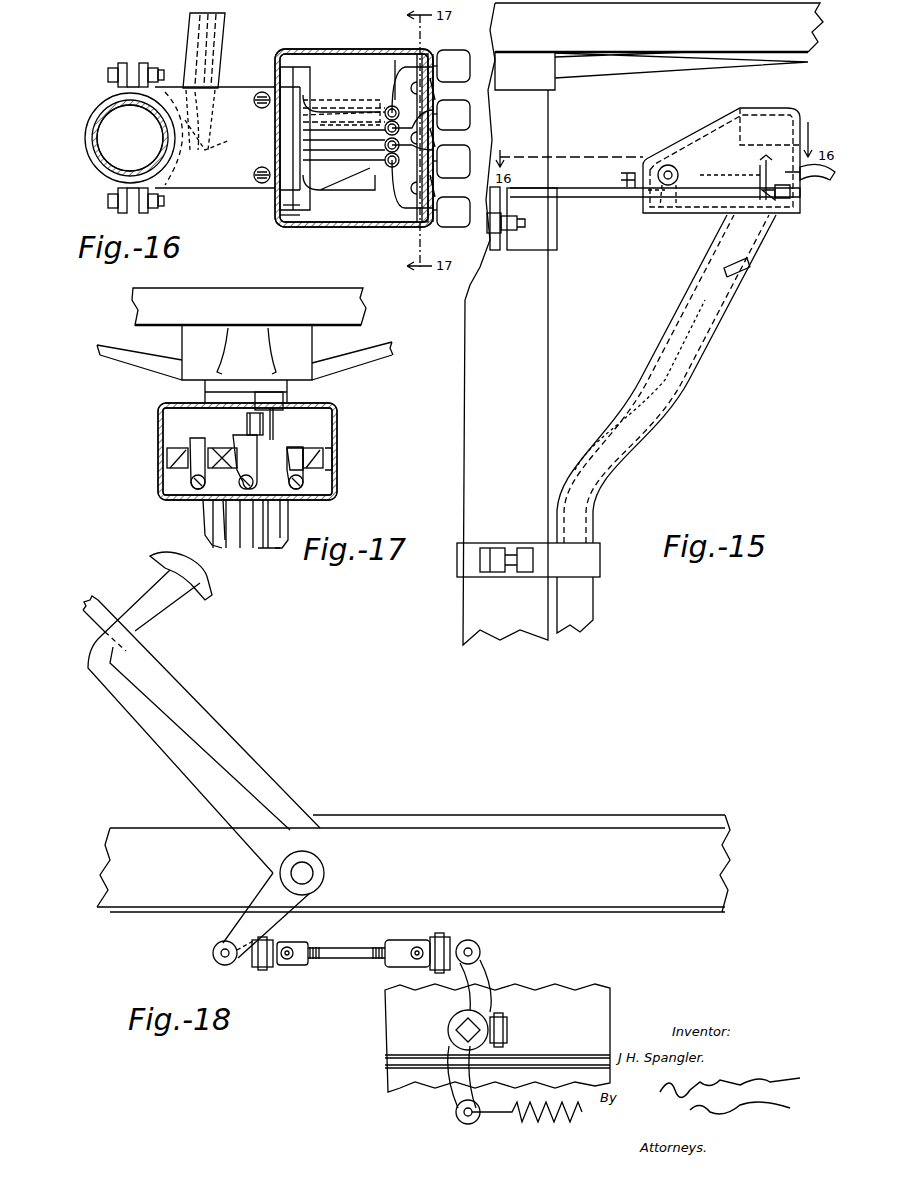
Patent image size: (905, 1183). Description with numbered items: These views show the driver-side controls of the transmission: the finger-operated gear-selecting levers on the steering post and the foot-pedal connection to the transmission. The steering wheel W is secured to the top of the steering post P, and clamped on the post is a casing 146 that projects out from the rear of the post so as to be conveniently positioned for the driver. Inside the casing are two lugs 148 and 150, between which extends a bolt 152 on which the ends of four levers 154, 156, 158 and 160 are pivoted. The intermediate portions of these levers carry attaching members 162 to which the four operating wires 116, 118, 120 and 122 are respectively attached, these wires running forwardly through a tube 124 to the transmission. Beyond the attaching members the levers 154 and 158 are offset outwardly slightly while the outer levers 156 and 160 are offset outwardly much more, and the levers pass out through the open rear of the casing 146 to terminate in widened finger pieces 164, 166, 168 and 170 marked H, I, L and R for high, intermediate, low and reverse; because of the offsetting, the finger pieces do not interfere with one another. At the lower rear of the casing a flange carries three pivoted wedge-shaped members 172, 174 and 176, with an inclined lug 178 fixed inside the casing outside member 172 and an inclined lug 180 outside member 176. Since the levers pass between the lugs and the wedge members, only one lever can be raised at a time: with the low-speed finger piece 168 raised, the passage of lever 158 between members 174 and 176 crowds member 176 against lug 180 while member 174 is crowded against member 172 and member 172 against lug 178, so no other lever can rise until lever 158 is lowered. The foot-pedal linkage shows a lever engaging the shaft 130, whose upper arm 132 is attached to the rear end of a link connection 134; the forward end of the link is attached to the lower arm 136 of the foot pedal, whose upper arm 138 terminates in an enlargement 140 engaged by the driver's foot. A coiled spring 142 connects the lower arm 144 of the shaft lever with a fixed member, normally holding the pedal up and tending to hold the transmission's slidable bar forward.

In FIG. 16, the steering post P is at (100, 168).
In FIG. 15, the steering post P is at (538, 350).
In FIG. 15, the steering wheel W is at (652, 40).
In FIG. 17, the steering wheel W is at (232, 292).
In FIG. 16, the conductor wire 116 is at (345, 150).
In FIG. 17, the conductor wire 116 is at (225, 532).
In FIG. 16, the conductor wire 118 is at (342, 135).
In FIG. 15, the conductor wire 118 is at (680, 335).
In FIG. 17, the conductor wire 118 is at (240, 515).
In FIG. 16, the conductor wire 120 is at (360, 80).
In FIG. 17, the conductor wire 120 is at (263, 555).
In FIG. 16, the conductor wire 122 is at (393, 60).
In FIG. 17, the conductor wire 122 is at (285, 512).
In FIG. 16, the tube 124 is at (222, 38).
In FIG. 15, the tube 124 is at (623, 462).
In FIG. 18, the shaft 130 is at (456, 1030).
In FIG. 18, the upper arm of lever 132 is at (480, 968).
In FIG. 18, the link connection 134 is at (368, 955).
In FIG. 18, the lower arm of foot pedal 136 is at (250, 920).
In FIG. 18, the upper arm of foot pedal 138 is at (215, 782).
In FIG. 17, the enlargement 140 is at (208, 592).
In FIG. 18, the coiled spring 142 is at (542, 1120).
In FIG. 18, the lower arm of lever 144 is at (460, 1100).
In FIG. 16, the casing 146 is at (308, 38).
In FIG. 15, the casing 146 is at (710, 135).
In FIG. 17, the casing 146 is at (158, 425).
In FIG. 16, the lug 148 is at (283, 72).
In FIG. 16, the lug 150 is at (283, 208).
In FIG. 16, the bolt 152 is at (282, 222).
In FIG. 15, the bolt 152 is at (667, 200).
In FIG. 16, the lever 154 is at (320, 215).
In FIG. 16, the lever 156 is at (378, 200).
In FIG. 15, the lever 156 is at (710, 200).
In FIG. 16, the lever 158 is at (313, 110).
In FIG. 17, the lever 158 is at (278, 422).
In FIG. 16, the lever 160 is at (340, 105).
In FIG. 15, the attaching members 162 is at (780, 218).
In FIG. 17, the attaching members 162 is at (203, 510).
In FIG. 15, the finger piece 164 is at (480, 150).
In FIG. 17, the finger piece 164 is at (238, 445).
In FIG. 16, the finger piece 166 is at (448, 226).
In FIG. 15, the finger piece 166 is at (828, 180).
In FIG. 17, the finger piece 166 is at (170, 462).
In FIG. 15, the finger piece 168 is at (483, 108).
In FIG. 17, the finger piece 168 is at (283, 397).
In FIG. 15, the finger piece 170 is at (485, 60).
In FIG. 17, the finger piece 170 is at (318, 460).
In FIG. 16, the wedge-shaped member 172 is at (433, 190).
In FIG. 17, the wedge-shaped member 172 is at (195, 445).
In FIG. 16, the wedge-shaped member 174 is at (433, 140).
In FIG. 17, the wedge-shaped member 174 is at (262, 410).
In FIG. 16, the wedge-shaped member 176 is at (433, 96).
In FIG. 17, the wedge-shaped member 176 is at (300, 448).
In FIG. 17, the inclined lug 178 is at (167, 444).
In FIG. 16, the inclined lug 180 is at (445, 52).
In FIG. 17, the inclined lug 180 is at (323, 446).